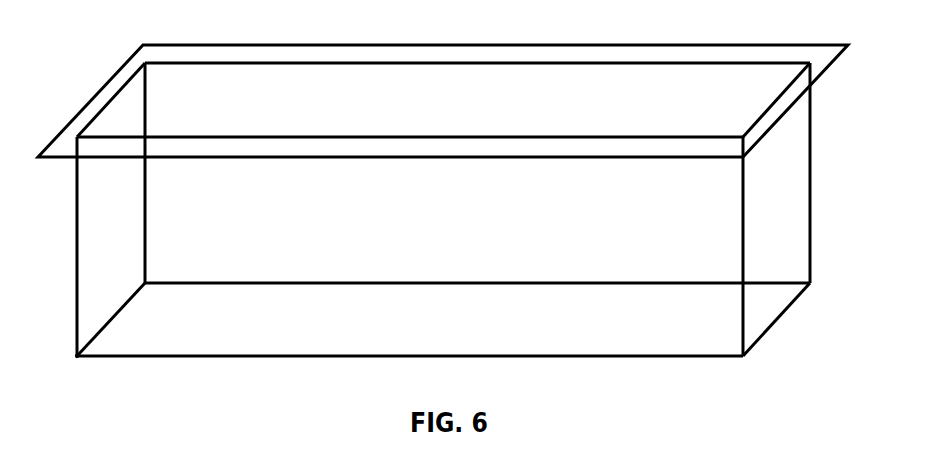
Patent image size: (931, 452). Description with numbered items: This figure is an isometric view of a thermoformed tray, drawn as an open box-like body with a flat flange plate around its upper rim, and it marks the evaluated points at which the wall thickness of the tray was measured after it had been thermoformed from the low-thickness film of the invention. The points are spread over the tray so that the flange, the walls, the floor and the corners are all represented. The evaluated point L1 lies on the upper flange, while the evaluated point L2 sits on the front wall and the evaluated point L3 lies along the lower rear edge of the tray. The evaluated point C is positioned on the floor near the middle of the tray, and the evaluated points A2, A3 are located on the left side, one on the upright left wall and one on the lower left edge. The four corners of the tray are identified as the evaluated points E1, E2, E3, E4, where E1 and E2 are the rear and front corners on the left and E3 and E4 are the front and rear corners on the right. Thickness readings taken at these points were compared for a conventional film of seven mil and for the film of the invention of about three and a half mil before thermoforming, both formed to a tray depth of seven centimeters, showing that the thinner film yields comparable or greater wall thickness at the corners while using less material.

The evaluated point L1 is at (443, 91).
The evaluated point L2 is at (410, 246).
The evaluated point L3 is at (477, 174).
The evaluated point C is at (410, 335).
The evaluated point A2 is at (107, 246).
The evaluated point A3 is at (111, 319).
The evaluated point E1 is at (124, 172).
The evaluated point E2 is at (96, 347).
The evaluated point E3 is at (764, 319).
The evaluated point E4 is at (776, 171).